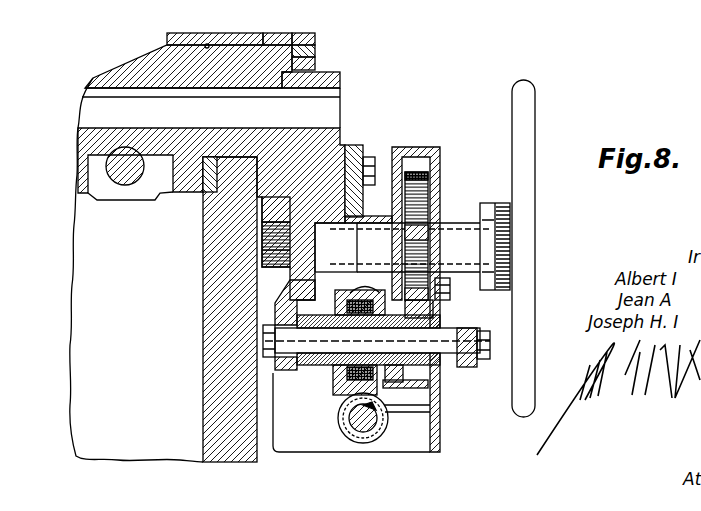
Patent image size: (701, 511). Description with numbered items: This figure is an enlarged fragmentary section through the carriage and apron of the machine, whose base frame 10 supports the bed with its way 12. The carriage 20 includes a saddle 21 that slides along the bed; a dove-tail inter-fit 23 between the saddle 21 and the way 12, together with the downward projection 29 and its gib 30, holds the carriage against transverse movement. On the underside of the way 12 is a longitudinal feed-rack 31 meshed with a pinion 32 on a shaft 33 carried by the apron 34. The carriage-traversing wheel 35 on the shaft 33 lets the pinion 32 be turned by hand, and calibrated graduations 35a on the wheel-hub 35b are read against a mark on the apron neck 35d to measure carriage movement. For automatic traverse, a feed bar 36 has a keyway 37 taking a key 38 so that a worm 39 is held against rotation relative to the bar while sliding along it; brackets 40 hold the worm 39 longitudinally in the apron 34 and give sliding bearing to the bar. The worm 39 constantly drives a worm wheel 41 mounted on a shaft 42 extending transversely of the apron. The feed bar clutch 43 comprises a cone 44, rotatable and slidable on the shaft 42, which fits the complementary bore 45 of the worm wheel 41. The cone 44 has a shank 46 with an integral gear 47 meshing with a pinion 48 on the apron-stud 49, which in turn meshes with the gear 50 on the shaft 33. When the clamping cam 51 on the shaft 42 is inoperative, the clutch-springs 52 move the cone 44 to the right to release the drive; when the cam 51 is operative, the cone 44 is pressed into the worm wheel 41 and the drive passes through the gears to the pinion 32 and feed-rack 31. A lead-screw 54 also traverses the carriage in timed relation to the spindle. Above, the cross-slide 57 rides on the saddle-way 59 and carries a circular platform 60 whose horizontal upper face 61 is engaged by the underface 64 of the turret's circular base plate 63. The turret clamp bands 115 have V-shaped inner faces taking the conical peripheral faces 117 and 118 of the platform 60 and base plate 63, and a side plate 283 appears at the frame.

The base frame 10 is at (231, 452).
The way 12 is at (300, 188).
The carriage 20 is at (369, 59).
The saddle 21 is at (78, 138).
The dove-tail inter-fit 23 is at (345, 175).
The downward projection 29 is at (205, 186).
The gib 30 is at (262, 206).
The feed-rack 31 is at (262, 228).
The pinion 32 is at (262, 253).
The shaft 33 is at (448, 232).
The apron 34 is at (437, 392).
The carriage-traversing wheel 35 is at (530, 110).
The graduations 35a is at (505, 218).
The wheel-hub 35b is at (497, 230).
The apron neck 35d is at (488, 250).
The feed bar 36 is at (360, 437).
The keyway 37 is at (380, 413).
The key 38 is at (385, 402).
The worm 39 is at (383, 432).
The brackets 40 is at (410, 430).
The worm wheel 41 is at (345, 405).
The shaft 42 is at (215, 360).
The feed bar clutch 43 is at (335, 372).
The cone 44 is at (376, 332).
The bore 45 is at (350, 394).
The shank 46 is at (384, 366).
The gear 47 is at (384, 382).
The pinion 48 is at (428, 310).
The apron-stud 49 is at (440, 290).
The gear 50 is at (420, 177).
The clamping cam 51 is at (470, 328).
The clutch-springs 52 is at (345, 380).
The lead-screw 54 is at (112, 170).
The cross-slide 57 is at (330, 82).
The saddle-way 59 is at (105, 107).
The circular platform 60 is at (185, 55).
The upper face 61 is at (268, 40).
The circular base plate 63 is at (252, 37).
The underface 64 is at (207, 45).
The half-rings 115 is at (316, 38).
The conical peripheral face 117 is at (316, 63).
The conical peripheral face 118 is at (316, 50).
The side plate 283 is at (257, 428).